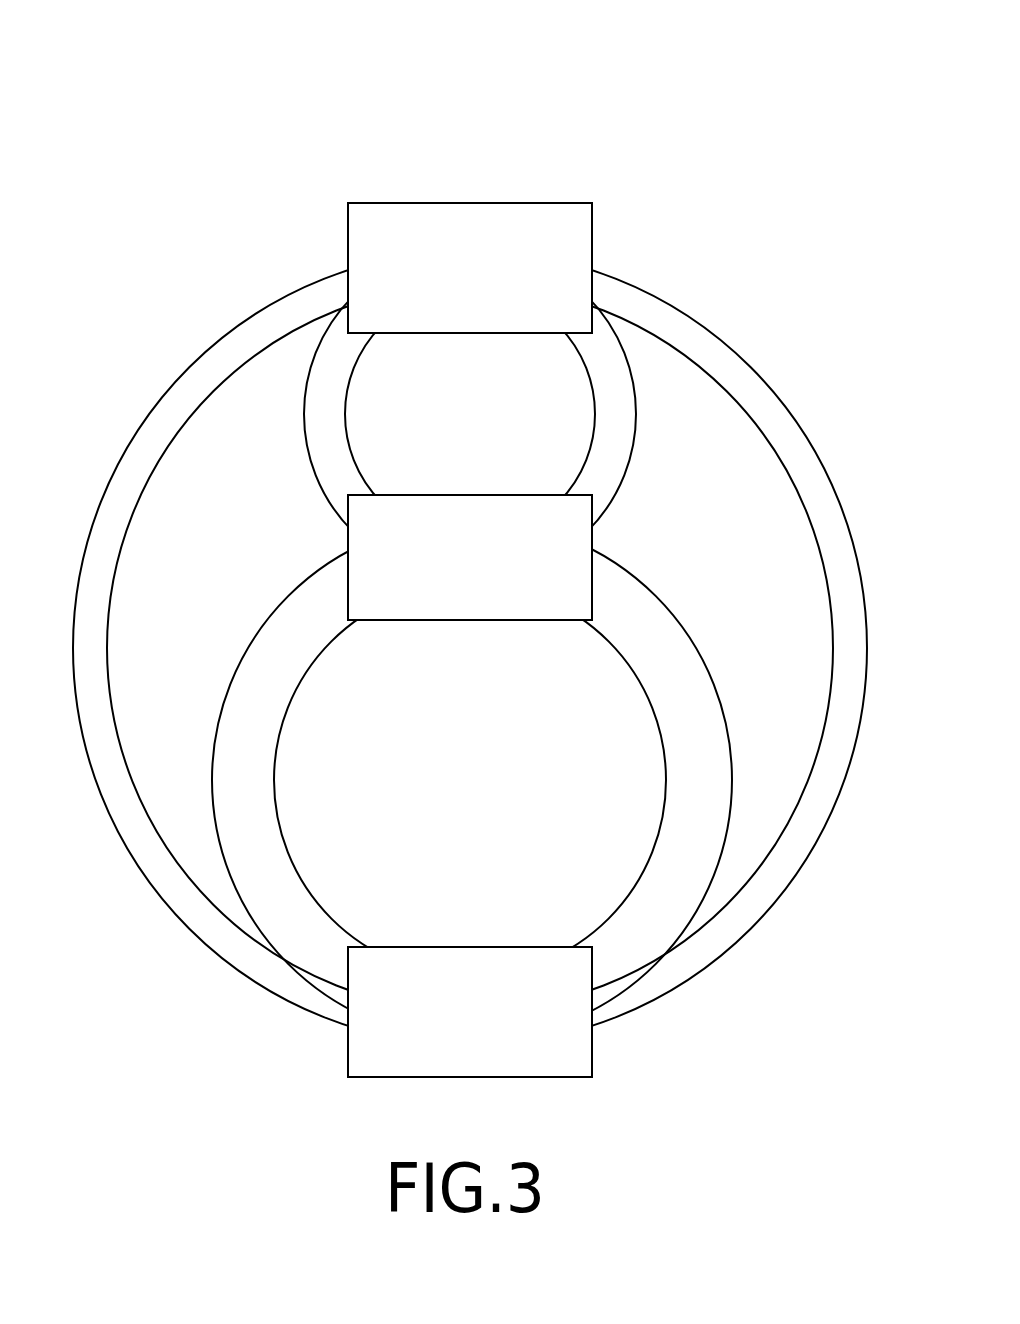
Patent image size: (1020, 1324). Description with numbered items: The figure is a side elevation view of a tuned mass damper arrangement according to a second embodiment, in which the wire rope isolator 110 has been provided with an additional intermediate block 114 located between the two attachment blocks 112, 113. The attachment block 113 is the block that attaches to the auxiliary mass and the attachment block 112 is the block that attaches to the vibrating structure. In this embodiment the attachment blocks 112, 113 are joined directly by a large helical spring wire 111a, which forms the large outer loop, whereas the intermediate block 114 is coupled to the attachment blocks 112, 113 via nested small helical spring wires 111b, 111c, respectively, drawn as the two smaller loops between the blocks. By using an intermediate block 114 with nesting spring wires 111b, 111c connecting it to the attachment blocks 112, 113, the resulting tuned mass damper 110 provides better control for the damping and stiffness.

The wire rope isolator 110 is at (459, 538).
The large helical spring wire 111a is at (720, 352).
The small helical spring wire 111b is at (280, 703).
The small helical spring wire 111c is at (320, 422).
The attachment block 112 is at (494, 1033).
The attachment block 113 is at (494, 290).
The intermediate block 114 is at (494, 577).